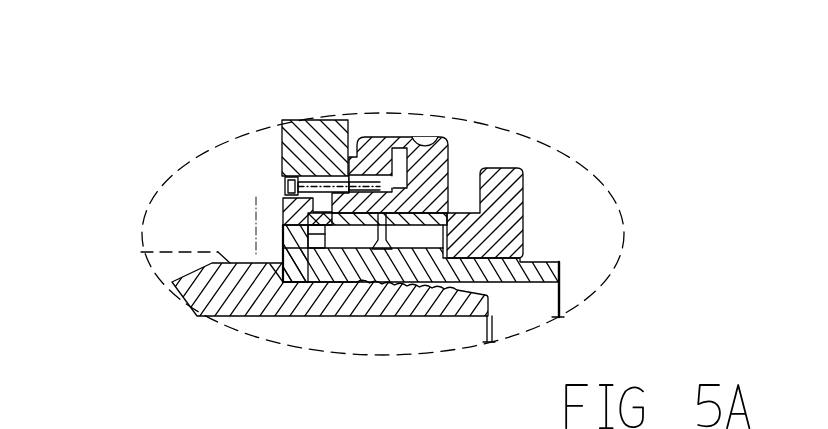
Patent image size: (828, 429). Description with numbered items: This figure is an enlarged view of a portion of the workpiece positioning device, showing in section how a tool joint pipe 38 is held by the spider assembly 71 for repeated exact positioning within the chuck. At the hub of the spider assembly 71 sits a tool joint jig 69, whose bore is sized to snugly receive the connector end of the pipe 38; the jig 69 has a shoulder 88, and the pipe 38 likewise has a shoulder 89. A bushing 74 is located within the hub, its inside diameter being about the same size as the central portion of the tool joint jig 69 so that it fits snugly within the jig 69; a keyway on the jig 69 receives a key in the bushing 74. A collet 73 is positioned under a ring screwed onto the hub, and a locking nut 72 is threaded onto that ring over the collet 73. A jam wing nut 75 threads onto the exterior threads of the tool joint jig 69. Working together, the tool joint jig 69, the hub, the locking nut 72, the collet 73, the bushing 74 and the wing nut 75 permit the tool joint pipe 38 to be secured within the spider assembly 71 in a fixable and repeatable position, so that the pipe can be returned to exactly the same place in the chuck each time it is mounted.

The tool joint pipe 38 is at (333, 316).
The tool joint jig 69 is at (560, 273).
The spider assembly 71 is at (282, 157).
The locking nut 72 is at (448, 157).
The collet 73 is at (448, 208).
The bushing 74 is at (366, 205).
The jam wing nut 75 is at (523, 200).
The shoulder 88 is at (283, 268).
The shoulder 89 is at (274, 278).